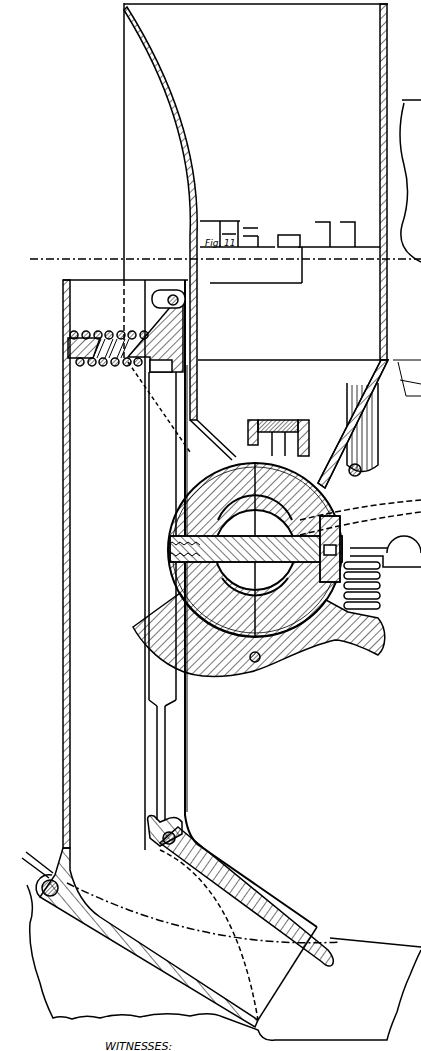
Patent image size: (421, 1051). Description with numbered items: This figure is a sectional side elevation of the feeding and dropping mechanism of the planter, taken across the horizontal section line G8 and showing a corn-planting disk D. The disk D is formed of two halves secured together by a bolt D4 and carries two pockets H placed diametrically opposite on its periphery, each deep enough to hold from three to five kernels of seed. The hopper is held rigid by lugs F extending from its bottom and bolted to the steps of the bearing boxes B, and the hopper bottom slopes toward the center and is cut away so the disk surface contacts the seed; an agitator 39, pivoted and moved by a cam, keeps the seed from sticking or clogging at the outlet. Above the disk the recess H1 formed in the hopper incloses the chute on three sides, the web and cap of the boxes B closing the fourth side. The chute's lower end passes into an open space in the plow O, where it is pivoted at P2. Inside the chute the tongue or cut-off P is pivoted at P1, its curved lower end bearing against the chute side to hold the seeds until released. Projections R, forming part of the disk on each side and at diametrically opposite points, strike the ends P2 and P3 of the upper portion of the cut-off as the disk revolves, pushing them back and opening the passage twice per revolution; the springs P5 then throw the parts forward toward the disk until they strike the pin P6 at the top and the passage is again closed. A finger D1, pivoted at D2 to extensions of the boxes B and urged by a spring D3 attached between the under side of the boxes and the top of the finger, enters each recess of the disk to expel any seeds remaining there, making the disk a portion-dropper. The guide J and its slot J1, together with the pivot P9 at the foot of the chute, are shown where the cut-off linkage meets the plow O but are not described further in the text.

The section line G8 is at (221, 265).
The recess H1 is at (190, 243).
The housing / chute J is at (70, 322).
The pin P6 is at (166, 300).
The springs P5 is at (116, 366).
The upper end of tongue P2 is at (147, 480).
The end of tongue P3 is at (174, 763).
The guide slot J1 is at (145, 790).
The pivot of cut-off P1 is at (162, 845).
The tongue or cut-off P is at (248, 900).
The chute pivot P9 is at (46, 878).
The plow O is at (224, 962).
The pockets H is at (255, 549).
The projections R is at (200, 552).
The disk D is at (330, 520).
The finger D1 is at (358, 660).
The finger pivot D2 is at (255, 664).
The spring D3 is at (380, 590).
The bolt D4 is at (360, 507).
The boxes B is at (372, 545).
The lugs F is at (380, 458).
The agitator 39 is at (292, 425).